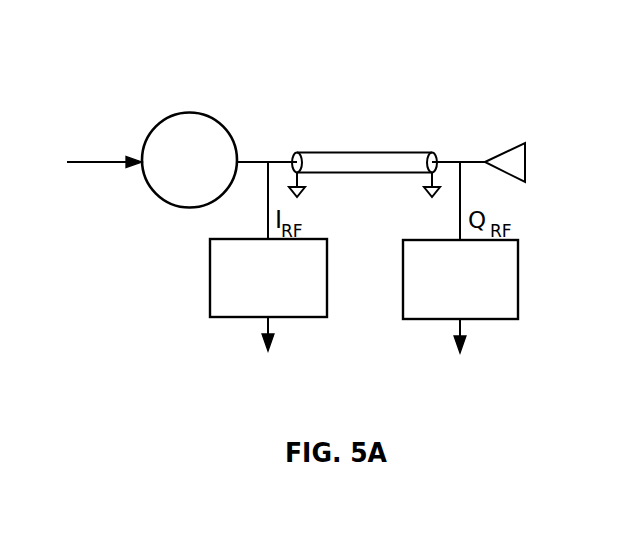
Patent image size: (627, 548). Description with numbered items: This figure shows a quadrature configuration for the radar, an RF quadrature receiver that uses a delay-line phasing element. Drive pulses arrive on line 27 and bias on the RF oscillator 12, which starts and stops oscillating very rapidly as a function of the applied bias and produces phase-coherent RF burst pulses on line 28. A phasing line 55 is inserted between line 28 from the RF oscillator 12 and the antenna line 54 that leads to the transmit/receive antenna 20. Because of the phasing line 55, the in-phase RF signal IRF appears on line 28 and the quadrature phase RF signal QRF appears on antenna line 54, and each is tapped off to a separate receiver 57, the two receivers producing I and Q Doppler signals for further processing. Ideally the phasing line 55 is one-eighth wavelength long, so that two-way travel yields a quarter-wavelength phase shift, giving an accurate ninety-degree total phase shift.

The RF oscillator 12 is at (190, 112).
The transmit/receive antenna 20 is at (533, 162).
The line 27 is at (80, 157).
The line 28 is at (258, 155).
The antenna line 54 is at (450, 158).
The phasing line 55 is at (353, 152).
The receiver 57 is at (207, 272).